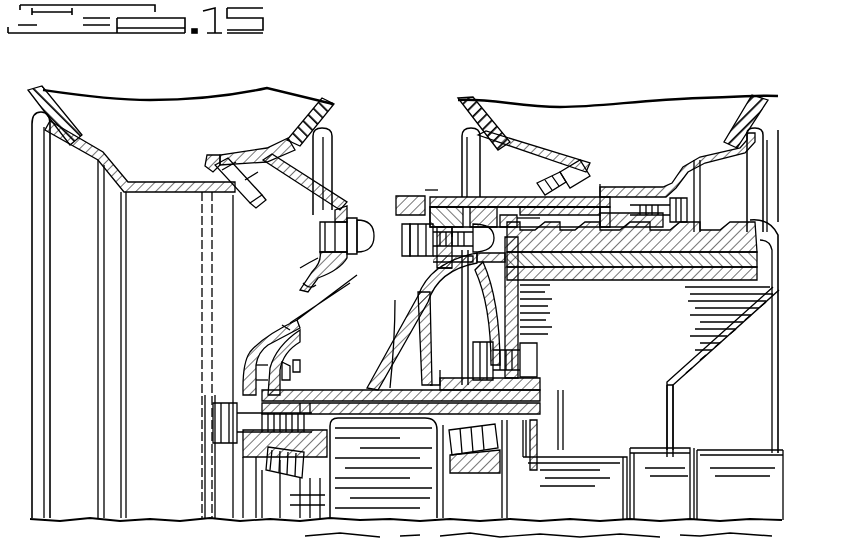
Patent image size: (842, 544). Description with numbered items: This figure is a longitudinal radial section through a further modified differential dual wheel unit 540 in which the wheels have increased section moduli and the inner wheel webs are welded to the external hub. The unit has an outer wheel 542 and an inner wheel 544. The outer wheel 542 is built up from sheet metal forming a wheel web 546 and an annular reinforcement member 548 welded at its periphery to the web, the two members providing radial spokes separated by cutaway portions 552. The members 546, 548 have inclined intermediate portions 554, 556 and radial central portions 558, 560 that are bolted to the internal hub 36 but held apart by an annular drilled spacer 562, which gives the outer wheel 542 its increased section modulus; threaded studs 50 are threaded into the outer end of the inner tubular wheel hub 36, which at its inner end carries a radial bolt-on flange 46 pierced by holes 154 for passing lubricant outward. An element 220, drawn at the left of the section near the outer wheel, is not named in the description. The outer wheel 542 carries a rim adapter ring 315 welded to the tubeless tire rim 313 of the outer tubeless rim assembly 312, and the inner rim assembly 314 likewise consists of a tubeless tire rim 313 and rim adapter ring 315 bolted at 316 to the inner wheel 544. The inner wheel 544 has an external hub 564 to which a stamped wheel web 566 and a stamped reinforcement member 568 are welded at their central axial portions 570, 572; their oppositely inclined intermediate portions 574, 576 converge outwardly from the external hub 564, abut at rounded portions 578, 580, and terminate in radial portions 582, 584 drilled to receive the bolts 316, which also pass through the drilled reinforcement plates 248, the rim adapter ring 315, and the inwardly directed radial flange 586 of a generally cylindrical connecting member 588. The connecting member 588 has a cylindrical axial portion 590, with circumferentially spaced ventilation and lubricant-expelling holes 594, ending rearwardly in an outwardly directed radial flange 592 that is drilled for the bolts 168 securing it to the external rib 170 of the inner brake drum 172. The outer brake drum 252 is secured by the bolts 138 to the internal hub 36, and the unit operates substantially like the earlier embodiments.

The outer tubeless tire rim assembly 312 is at (108, 136).
The tubeless tire rim 313 is at (246, 142).
The differential dual wheel unit 540 is at (396, 98).
The cylindrical axial portion 590 is at (505, 222).
The connecting member 588 is at (517, 222).
The outer brake drum 252 is at (555, 222).
The inner tubeless tire rim assembly 314 is at (647, 185).
The external rib 170 is at (703, 182).
The inner brake drum 172 is at (778, 182).
The ventilation and lubricant-expelling holes 594 is at (640, 178).
The outwardly-directed radial flange 592 is at (660, 197).
The bolts 168 is at (707, 222).
The rim adapter ring 315 is at (343, 198).
The radial portion 584 is at (440, 197).
The radial portion 582 is at (430, 210).
The reinforcement plates 248 is at (420, 224).
The inwardly-directed radial flange 586 is at (612, 197).
The bolts 316 is at (320, 228).
The threaded studs 50 is at (296, 272).
The outer wheel 542 is at (290, 272).
The cutaway portions 552 is at (282, 282).
The wheel web 546 is at (257, 317).
The reinforcement member 548 is at (282, 325).
The inclined intermediate portion 554 is at (282, 330).
The inclined intermediate portion 556 is at (282, 350).
The radial central portion 560 is at (282, 366).
The radial central portion 558 is at (210, 410).
The hub bolt 220 is at (218, 428).
The spacer 562 is at (255, 453).
The rounded portion 578 is at (332, 282).
The inner wheel 544 is at (335, 300).
The inclined intermediate portion 574 is at (418, 312).
The stamped wheel web 566 is at (386, 333).
The central axial portion 572 is at (428, 358).
The external hub 564 is at (405, 382).
The central axial portion 570 is at (368, 390).
The rounded portion 580 is at (518, 288).
The stamped reinforcement member 568 is at (518, 300).
The inclined intermediate portion 576 is at (518, 315).
The radial bolt-on flange 46 is at (440, 324).
The bolts 138 is at (537, 362).
The holes 154 is at (566, 430).
The inner tubular wheel hub 36 is at (390, 432).